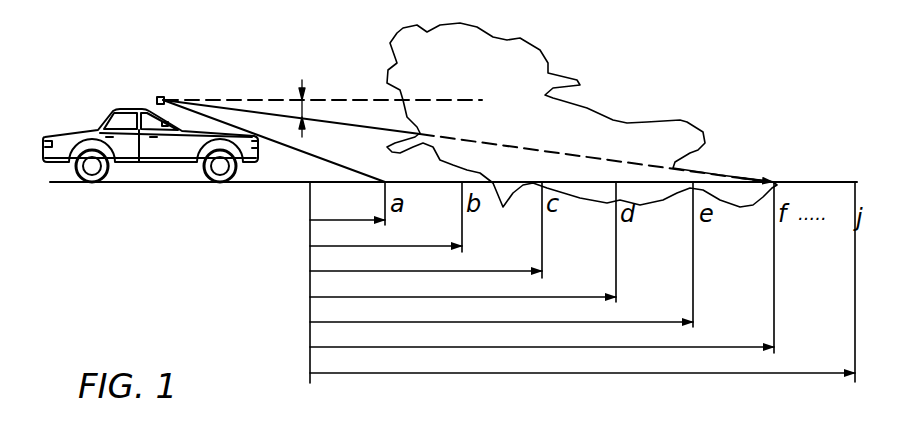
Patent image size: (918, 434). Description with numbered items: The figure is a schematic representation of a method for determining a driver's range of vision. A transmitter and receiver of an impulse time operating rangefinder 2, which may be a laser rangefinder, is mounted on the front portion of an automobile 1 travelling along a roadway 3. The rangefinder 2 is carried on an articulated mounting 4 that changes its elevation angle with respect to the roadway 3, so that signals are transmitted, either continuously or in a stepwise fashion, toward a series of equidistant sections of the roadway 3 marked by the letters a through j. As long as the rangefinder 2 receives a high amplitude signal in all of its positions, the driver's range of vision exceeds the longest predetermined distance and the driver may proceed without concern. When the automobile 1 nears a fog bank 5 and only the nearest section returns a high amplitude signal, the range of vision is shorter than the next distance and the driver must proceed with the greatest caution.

The automobile 1 is at (68, 142).
The impulse time operating rangefinder 2 is at (161, 97).
The roadway 3 is at (50, 182).
The articulated mounting 4 is at (158, 103).
The fog bank 5 is at (400, 35).